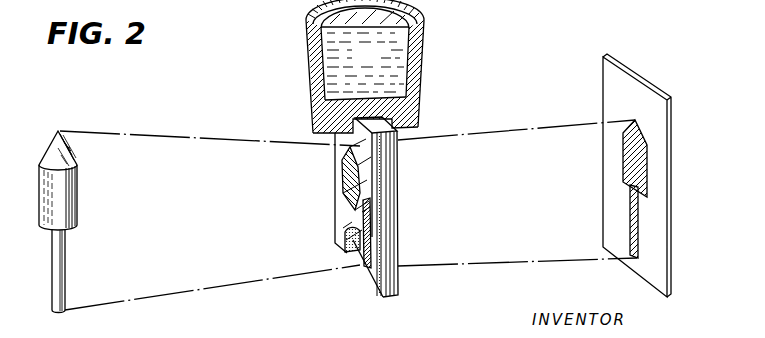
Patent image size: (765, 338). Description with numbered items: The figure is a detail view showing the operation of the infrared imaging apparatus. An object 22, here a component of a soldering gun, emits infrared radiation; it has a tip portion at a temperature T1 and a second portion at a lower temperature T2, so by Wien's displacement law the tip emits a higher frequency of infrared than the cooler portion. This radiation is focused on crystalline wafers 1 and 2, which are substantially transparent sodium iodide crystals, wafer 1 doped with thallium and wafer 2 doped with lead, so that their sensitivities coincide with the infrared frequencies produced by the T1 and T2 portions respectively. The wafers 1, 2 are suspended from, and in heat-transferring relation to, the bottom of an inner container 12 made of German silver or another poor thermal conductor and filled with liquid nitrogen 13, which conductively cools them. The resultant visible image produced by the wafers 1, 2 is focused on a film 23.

The crystalline wafer 1 is at (340, 193).
The crystalline wafer 2 is at (387, 211).
The inner container 12 is at (419, 48).
The liquid nitrogen 13 is at (365, 62).
The object 22 is at (72, 122).
The tip portion temperature T1 is at (68, 192).
The second portion temperature T2 is at (66, 270).
The film 23 is at (613, 77).